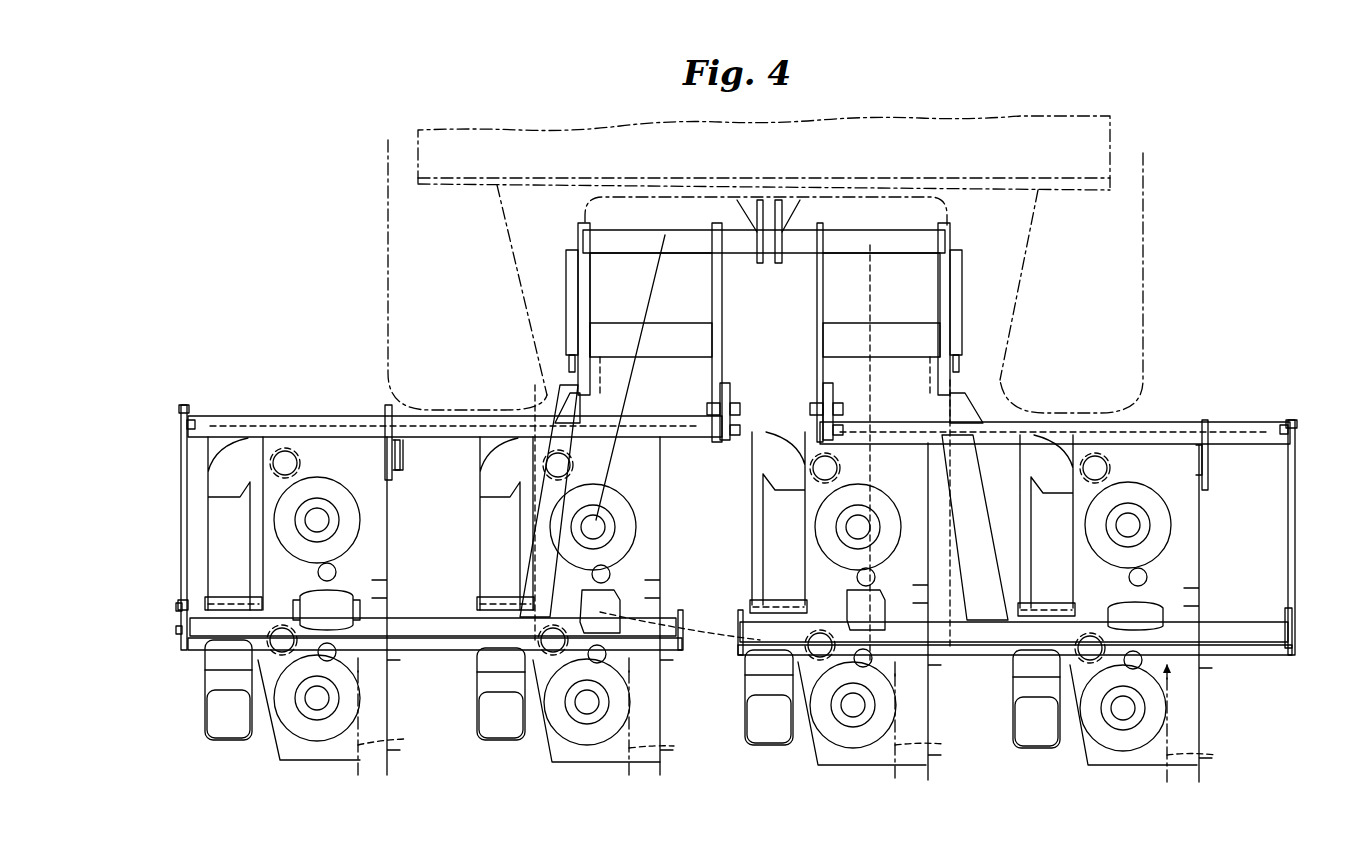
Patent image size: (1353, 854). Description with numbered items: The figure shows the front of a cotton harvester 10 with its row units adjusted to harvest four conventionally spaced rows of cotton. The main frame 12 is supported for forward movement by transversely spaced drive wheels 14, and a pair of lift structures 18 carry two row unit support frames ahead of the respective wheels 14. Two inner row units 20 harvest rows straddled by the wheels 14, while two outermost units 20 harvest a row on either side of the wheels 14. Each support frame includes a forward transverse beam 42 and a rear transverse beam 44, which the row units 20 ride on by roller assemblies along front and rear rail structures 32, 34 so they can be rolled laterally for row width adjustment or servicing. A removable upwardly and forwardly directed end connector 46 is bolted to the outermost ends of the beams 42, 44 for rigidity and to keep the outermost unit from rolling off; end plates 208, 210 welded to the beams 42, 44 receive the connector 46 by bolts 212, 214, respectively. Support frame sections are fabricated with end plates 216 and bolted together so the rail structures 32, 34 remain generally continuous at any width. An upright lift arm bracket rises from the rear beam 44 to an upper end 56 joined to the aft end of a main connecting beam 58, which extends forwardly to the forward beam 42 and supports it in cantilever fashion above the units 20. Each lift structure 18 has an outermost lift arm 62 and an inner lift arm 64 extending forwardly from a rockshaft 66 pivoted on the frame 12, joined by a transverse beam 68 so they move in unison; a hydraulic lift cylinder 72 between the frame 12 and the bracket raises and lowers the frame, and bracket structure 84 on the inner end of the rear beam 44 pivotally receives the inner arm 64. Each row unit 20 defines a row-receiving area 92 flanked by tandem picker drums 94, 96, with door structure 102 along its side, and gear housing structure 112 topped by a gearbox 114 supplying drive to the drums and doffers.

The cotton harvester 10 is at (791, 264).
The main frame 12 is at (505, 192).
The drive wheels 14 is at (388, 278).
The lift structure 18 is at (806, 328).
The cotton harvesting row units 20 is at (296, 764).
The front rail structure 32 is at (453, 650).
The rear rail structure 34 is at (428, 416).
The forward transverse beam 42 is at (430, 618).
The rear transverse beam 44 is at (338, 416).
The end connector 46 is at (181, 488).
The upper end of lift arm bracket 56 is at (565, 396).
The main connecting beam 58 is at (533, 536).
The outermost lift arm 62 is at (590, 266).
The inner lift arm 64 is at (712, 310).
The rockshaft 66 is at (616, 232).
The transverse beam 68 is at (612, 338).
The hydraulic lift cylinder 72 is at (566, 312).
The bracket structure 84 is at (820, 396).
The row-receiving area 92 is at (802, 720).
The picker drum 94 is at (356, 700).
The picker drum 96 is at (330, 502).
The door structure 102 is at (210, 752).
The gear housing structure 112 is at (378, 512).
The gearbox 114 is at (352, 608).
The end plate 208 is at (200, 612).
The end plate 210 is at (192, 420).
The bolts 212 is at (176, 630).
The bolts 214 is at (181, 412).
The end plates 216 is at (386, 415).